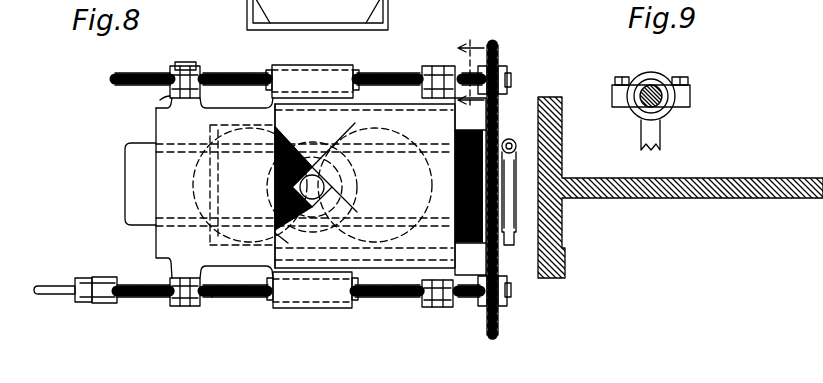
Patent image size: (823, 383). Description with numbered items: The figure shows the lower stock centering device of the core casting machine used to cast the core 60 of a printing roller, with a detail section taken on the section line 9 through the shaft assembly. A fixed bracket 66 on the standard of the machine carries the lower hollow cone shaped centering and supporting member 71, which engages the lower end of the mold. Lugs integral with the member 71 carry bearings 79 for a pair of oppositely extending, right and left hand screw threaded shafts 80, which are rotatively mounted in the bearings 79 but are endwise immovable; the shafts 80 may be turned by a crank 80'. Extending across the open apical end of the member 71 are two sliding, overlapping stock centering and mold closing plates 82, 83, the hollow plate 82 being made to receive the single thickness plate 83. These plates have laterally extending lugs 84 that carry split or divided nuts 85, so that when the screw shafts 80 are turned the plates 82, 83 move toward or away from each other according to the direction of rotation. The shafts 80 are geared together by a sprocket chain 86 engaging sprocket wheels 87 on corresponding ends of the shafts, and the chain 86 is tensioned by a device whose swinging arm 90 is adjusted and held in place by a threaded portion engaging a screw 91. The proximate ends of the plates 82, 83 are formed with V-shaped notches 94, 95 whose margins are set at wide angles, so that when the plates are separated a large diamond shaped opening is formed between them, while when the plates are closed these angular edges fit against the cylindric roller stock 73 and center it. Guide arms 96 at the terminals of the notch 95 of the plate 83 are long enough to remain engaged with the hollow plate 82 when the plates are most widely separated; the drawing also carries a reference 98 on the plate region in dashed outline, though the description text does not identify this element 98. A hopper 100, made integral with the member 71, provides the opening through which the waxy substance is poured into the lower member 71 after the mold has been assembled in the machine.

In FIG. 8, the section line 9— 9 is at (470, 74).
In FIG. 8, the core 60 is at (565, 234).
In FIG. 8, the fixed bracket 66 is at (540, 245).
In FIG. 8, the lower centering and supporting member 71 is at (216, 312).
In FIG. 8, the roller stock 73 is at (332, 196).
In FIG. 8, the bearings 79 is at (325, 69).
In FIG. 8, the screw threaded shafts 80 is at (298, 190).
In FIG. 9, the screw threaded shafts 80 is at (690, 98).
In FIG. 8, the cranks 80' is at (63, 311).
In FIG. 8, the hollow centering plate 82 is at (386, 120).
In FIG. 8, the single thickness centering plate 83 is at (170, 130).
In FIG. 8, the lugs 84 is at (168, 106).
In FIG. 9, the lugs 84 is at (655, 137).
In FIG. 8, the split nuts 85 is at (175, 308).
In FIG. 9, the split nuts 85 is at (655, 73).
In FIG. 8, the sprocket chain 86 is at (188, 76).
In FIG. 8, the sprocket wheels 87 is at (501, 62).
In FIG. 8, the swinging arm 90 is at (517, 163).
In FIG. 8, the screw 91 is at (516, 147).
In FIG. 8, the V-shaped notch 94 is at (286, 236).
In FIG. 8, the V-shaped notch 95 is at (328, 180).
In FIG. 8, the guide arms 96 is at (430, 148).
In FIG. 8, the chamber 98 is at (212, 182).
In FIG. 8, the hopper 100 is at (128, 206).